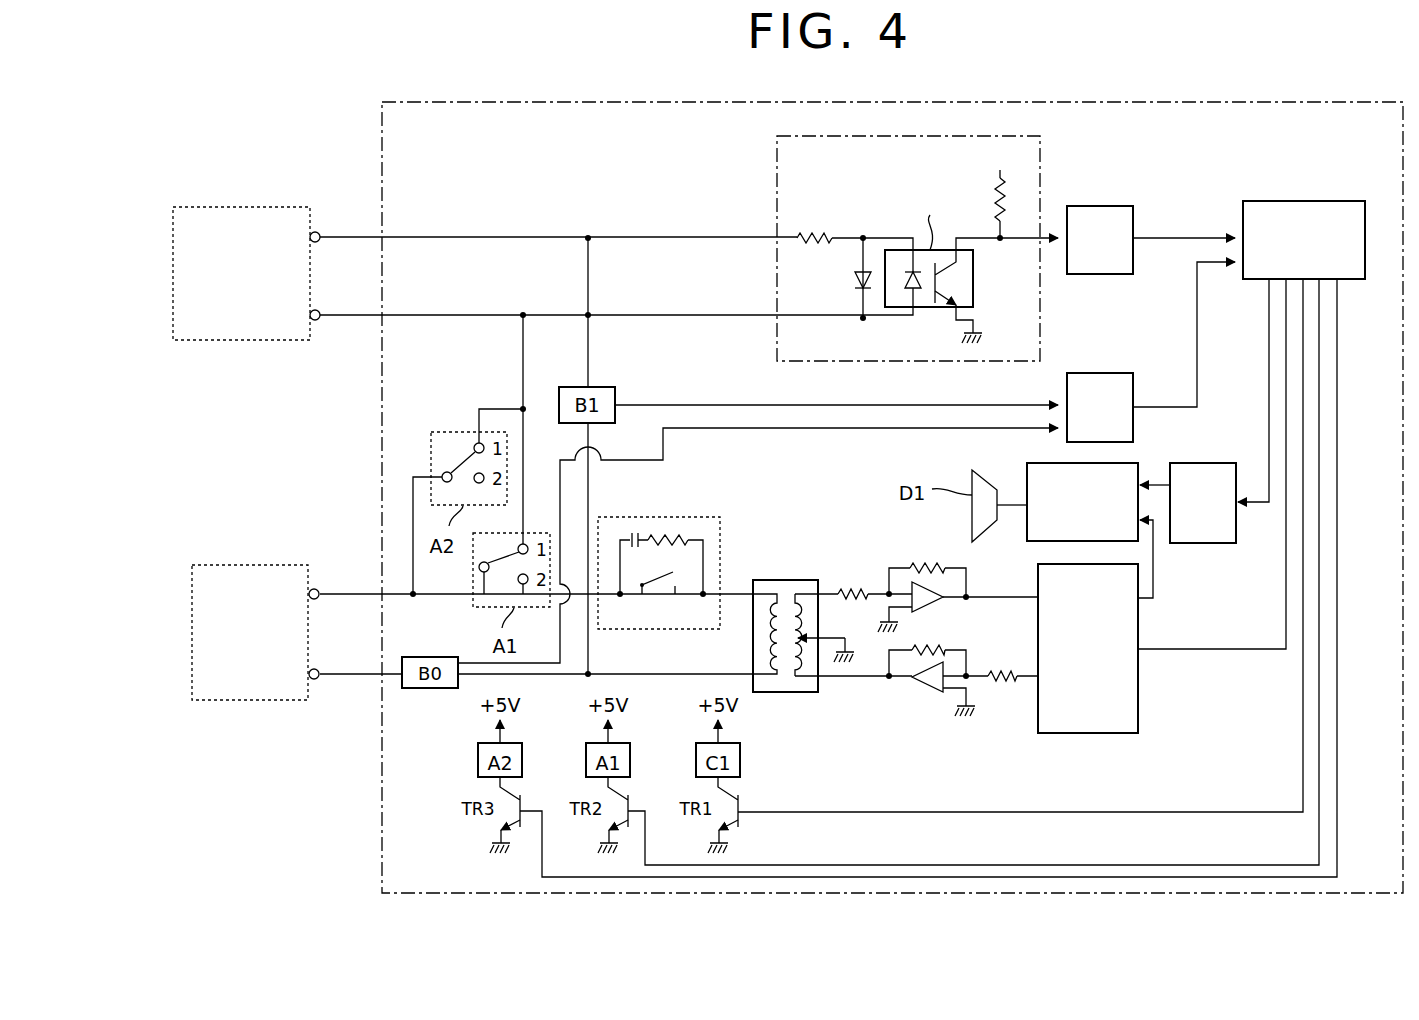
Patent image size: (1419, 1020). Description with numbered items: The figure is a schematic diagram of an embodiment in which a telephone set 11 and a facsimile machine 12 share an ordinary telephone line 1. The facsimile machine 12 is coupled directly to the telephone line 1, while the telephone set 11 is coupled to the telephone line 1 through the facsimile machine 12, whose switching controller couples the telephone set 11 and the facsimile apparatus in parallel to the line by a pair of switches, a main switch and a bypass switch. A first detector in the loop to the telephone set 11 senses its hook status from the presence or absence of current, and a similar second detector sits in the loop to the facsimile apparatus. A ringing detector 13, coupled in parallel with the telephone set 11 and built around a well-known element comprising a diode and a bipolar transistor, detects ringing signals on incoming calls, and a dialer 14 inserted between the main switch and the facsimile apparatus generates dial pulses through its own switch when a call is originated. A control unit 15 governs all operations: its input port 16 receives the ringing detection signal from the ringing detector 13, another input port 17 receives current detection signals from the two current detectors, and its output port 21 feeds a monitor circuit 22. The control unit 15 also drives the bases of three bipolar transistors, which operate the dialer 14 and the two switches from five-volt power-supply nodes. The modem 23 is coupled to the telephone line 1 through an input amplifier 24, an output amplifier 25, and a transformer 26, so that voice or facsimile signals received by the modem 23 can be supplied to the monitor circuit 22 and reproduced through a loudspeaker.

The telephone line 1 is at (266, 565).
The telephone set 11 is at (252, 207).
The facsimile machine 12 is at (382, 135).
The ringing detector 13 is at (1041, 164).
The dialer 14 is at (720, 541).
The control unit 15 is at (1294, 201).
The input port 16 is at (1106, 206).
The input port 17 is at (1110, 373).
The output port 21 is at (1212, 462).
The monitor circuit 22 is at (1134, 464).
The modem 23 is at (1140, 699).
The input amplifier 24 is at (930, 563).
The output amplifier 25 is at (924, 694).
The transformer 26 is at (803, 693).